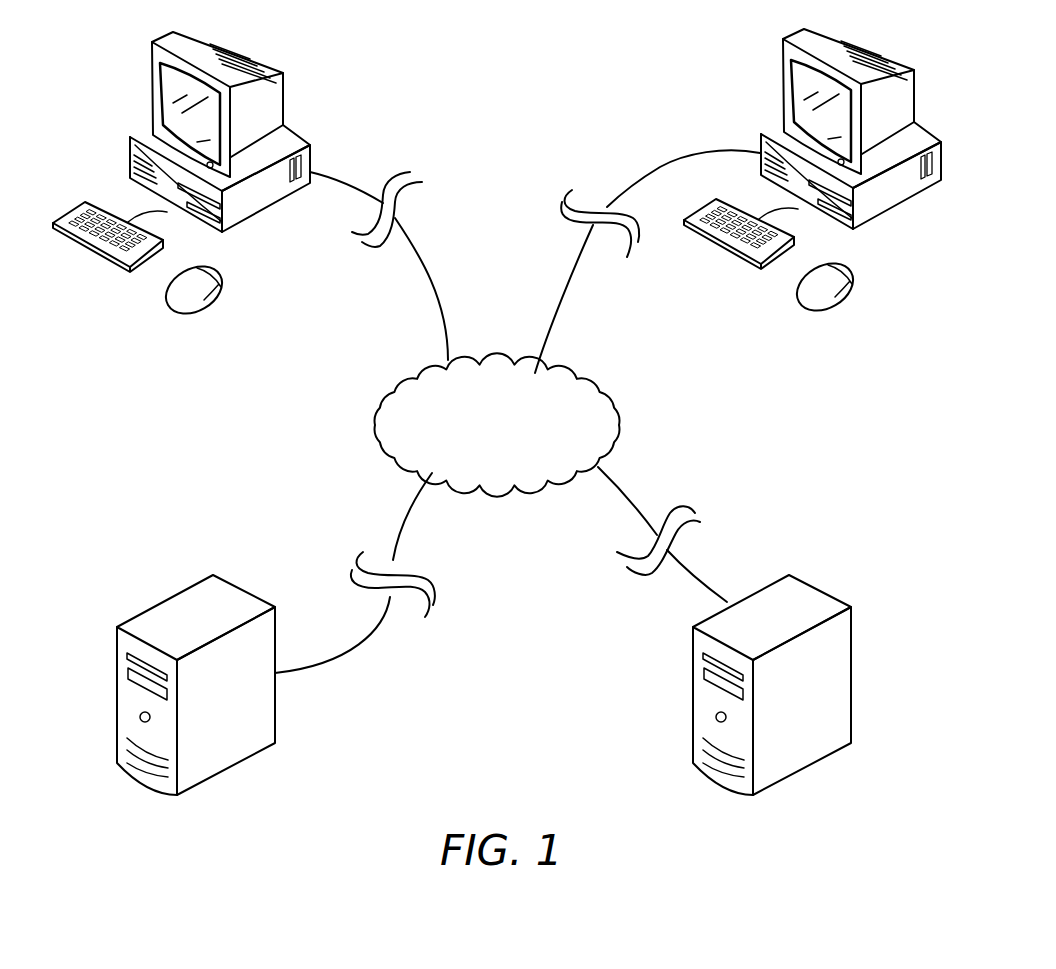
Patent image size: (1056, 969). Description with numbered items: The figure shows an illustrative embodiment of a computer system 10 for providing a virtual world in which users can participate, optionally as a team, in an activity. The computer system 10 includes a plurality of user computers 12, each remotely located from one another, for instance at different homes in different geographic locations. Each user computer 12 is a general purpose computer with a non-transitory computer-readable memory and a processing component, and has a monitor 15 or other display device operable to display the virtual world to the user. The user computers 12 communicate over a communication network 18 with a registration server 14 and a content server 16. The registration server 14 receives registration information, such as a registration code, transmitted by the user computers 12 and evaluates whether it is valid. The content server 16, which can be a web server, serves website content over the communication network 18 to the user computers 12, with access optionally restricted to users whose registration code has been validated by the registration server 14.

The computer system 10 is at (543, 412).
The user computer 12 is at (543, 176).
The registration server 14 is at (153, 612).
The monitor 15 is at (505, 112).
The content server 16 is at (817, 587).
The communication network 18 is at (375, 398).